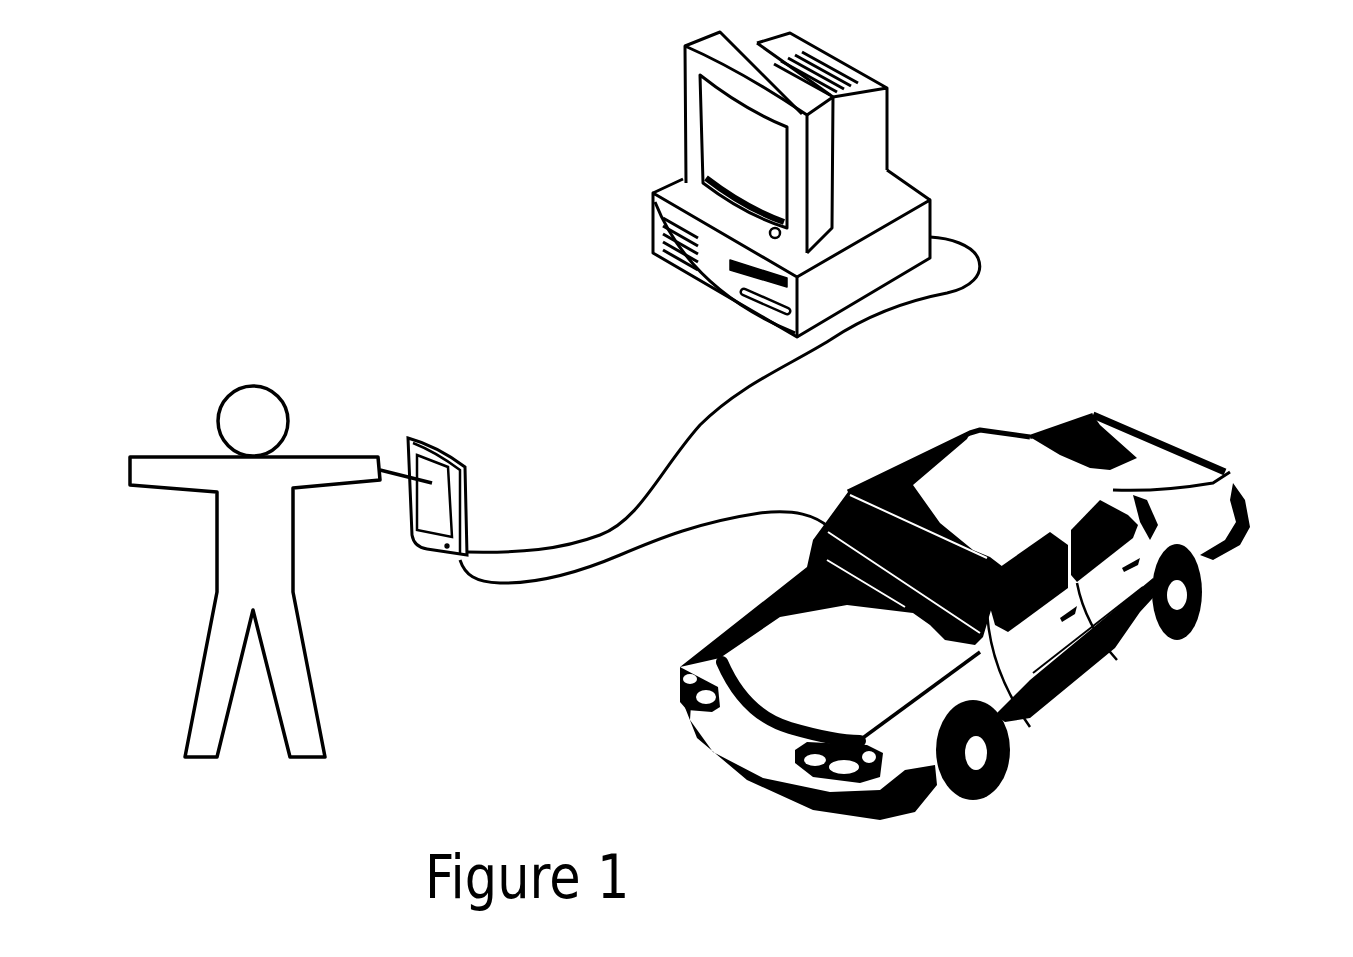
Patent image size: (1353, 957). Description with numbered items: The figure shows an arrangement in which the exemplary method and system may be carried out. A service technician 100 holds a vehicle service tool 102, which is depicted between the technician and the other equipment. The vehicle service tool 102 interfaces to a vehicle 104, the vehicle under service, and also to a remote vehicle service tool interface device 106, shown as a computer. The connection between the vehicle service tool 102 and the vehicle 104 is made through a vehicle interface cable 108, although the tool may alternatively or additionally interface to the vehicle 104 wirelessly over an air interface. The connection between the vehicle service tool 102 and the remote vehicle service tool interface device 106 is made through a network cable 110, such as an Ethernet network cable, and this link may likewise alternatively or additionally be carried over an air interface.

The service technician 100 is at (323, 727).
The vehicle service tool 102 is at (470, 498).
The vehicle 104 is at (1233, 483).
The remote vehicle service tool interface device 106 is at (931, 201).
The vehicle interface cable 108 is at (677, 535).
The network cable 110 is at (982, 267).